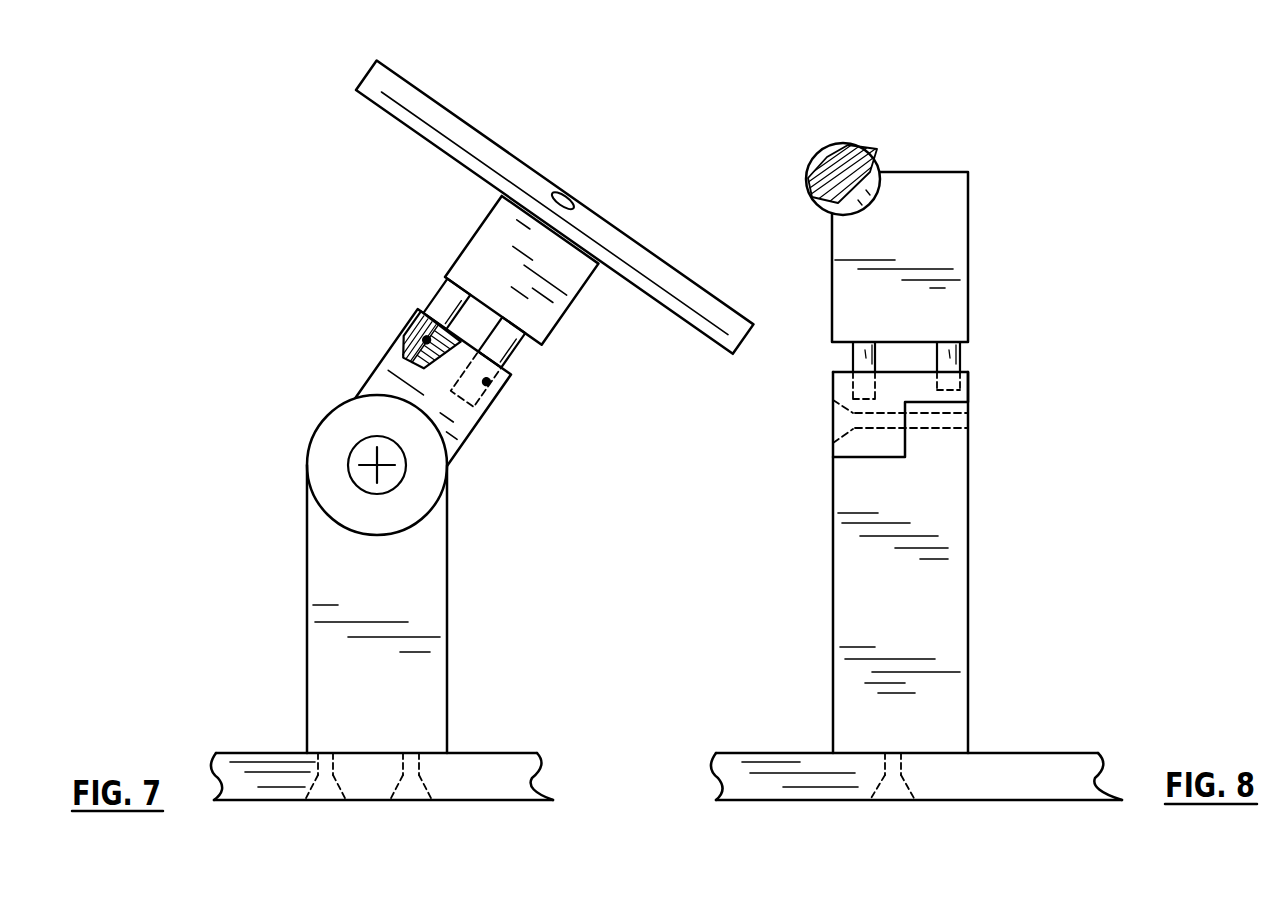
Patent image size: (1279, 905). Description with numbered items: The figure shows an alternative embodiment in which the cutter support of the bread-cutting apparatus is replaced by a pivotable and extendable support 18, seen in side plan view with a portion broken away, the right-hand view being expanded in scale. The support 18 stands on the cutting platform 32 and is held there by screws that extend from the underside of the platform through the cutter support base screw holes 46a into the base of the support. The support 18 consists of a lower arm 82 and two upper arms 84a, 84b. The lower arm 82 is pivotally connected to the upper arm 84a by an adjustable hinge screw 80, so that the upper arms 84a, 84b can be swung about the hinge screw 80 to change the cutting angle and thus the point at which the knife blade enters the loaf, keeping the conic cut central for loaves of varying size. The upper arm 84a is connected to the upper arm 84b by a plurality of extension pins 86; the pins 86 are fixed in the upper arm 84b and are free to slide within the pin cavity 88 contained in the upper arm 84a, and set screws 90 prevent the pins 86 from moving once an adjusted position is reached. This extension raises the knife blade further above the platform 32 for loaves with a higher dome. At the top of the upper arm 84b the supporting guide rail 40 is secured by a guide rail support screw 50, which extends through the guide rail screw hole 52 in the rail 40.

In FIG. 7, the pivotable and extendable support 18 is at (516, 96).
In FIG. 8, the pivotable and extendable support 18 is at (946, 90).
In FIG. 7, the cutting platform 32 is at (480, 787).
In FIG. 8, the cutting platform 32 is at (1028, 800).
In FIG. 7, the supporting guide rail 40 is at (424, 136).
In FIG. 8, the supporting guide rail 40 is at (881, 163).
In FIG. 7, the cutter support base screw holes 46a is at (323, 802).
In FIG. 8, the cutter support base screw holes 46a is at (895, 802).
In FIG. 8, the guide rail support screw 50 is at (828, 163).
In FIG. 7, the guide rail screw hole 52 is at (566, 198).
In FIG. 7, the hinge screw 80 is at (348, 461).
In FIG. 8, the hinge screw 80 is at (833, 422).
In FIG. 7, the lower arm 82 is at (447, 585).
In FIG. 8, the lower arm 82 is at (969, 565).
In FIG. 7, the upper arm 84a is at (488, 413).
In FIG. 8, the upper arm 84a is at (968, 388).
In FIG. 7, the upper arm 84b is at (570, 313).
In FIG. 8, the upper arm 84b is at (968, 249).
In FIG. 7, the extension pins 86 is at (448, 298).
In FIG. 8, the extension pins 86 is at (962, 356).
In FIG. 7, the pin cavity 88 is at (426, 340).
In FIG. 7, the set screws 90 is at (487, 382).